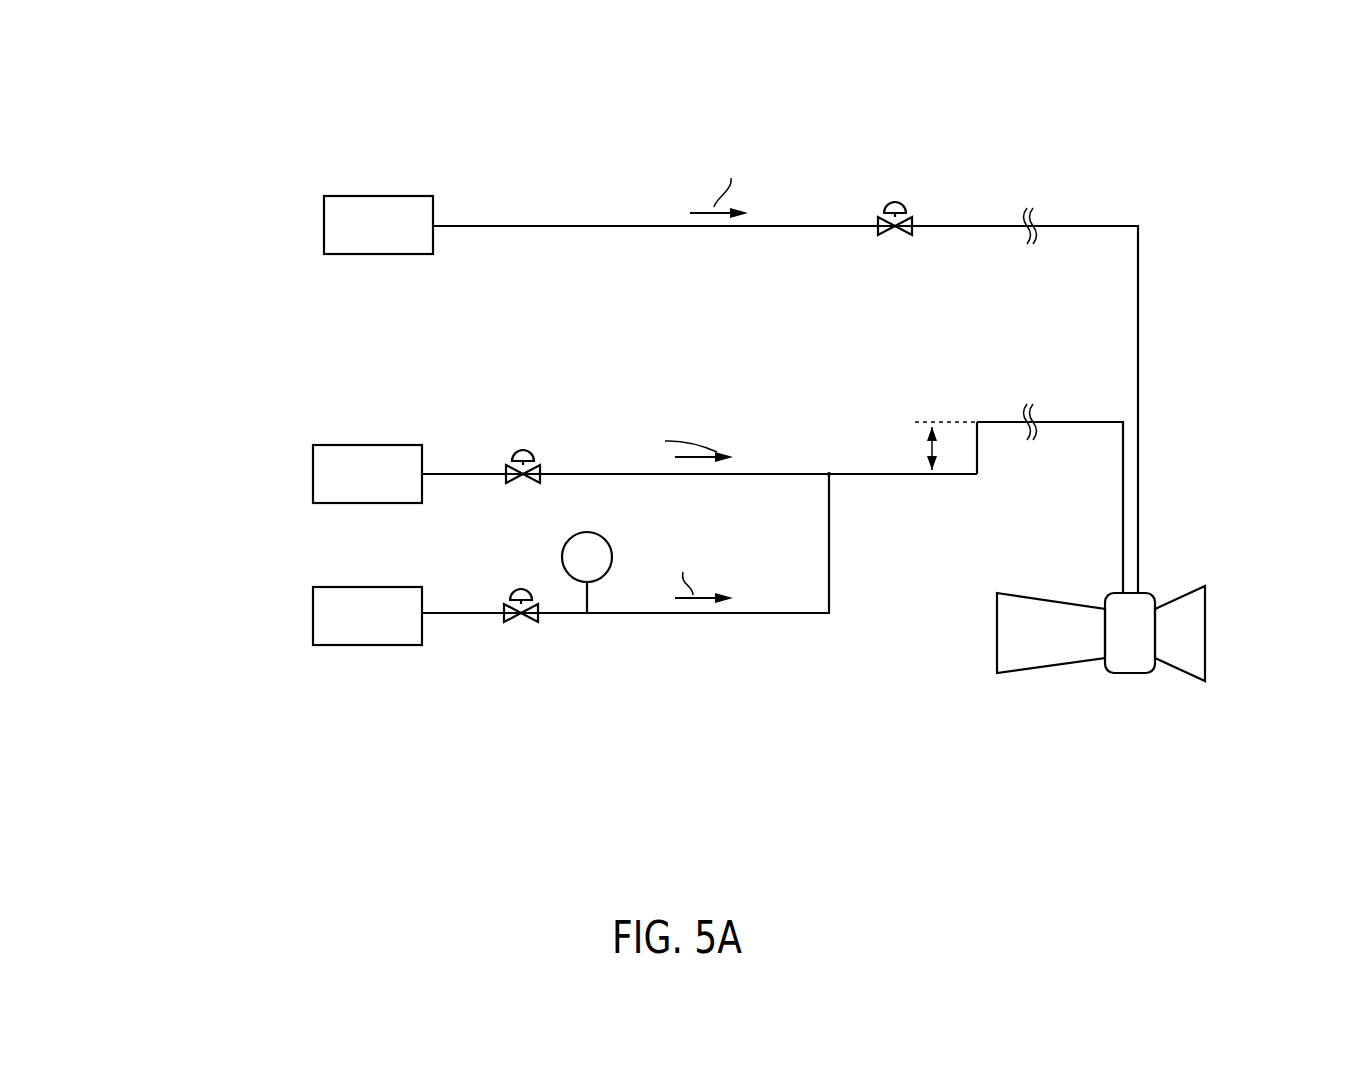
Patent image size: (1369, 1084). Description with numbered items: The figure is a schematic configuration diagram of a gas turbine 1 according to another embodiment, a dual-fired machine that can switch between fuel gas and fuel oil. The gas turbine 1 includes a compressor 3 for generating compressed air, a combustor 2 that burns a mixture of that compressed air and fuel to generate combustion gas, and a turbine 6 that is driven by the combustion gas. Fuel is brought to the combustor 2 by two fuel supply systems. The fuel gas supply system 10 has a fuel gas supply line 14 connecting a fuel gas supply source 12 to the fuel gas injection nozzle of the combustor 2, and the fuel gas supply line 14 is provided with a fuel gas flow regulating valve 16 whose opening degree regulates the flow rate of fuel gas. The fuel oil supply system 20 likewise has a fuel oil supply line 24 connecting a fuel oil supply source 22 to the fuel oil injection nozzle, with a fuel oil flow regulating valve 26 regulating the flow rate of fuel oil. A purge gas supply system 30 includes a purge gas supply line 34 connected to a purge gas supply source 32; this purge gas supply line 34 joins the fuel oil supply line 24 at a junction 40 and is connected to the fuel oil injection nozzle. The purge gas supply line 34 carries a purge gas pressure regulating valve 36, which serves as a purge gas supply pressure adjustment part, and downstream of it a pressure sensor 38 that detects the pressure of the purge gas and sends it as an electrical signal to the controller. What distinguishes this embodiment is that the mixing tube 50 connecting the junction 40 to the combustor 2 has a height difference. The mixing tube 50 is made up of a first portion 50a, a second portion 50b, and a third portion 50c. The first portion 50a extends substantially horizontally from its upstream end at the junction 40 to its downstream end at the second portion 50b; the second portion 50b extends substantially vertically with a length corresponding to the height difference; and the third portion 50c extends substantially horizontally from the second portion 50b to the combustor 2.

The gas turbine 1 is at (1242, 178).
The combustor 2 is at (1112, 765).
The compressor 3 is at (1013, 704).
The turbine 6 is at (1196, 705).
The fuel gas supply system 10 is at (473, 208).
The fuel gas supply source 12 is at (300, 213).
The fuel gas supply line 14 is at (710, 228).
The fuel gas flow regulating valve 16 is at (895, 202).
The fuel oil supply system 20 is at (454, 448).
The fuel oil supply source 22 is at (300, 462).
The fuel oil supply line 24 is at (757, 478).
The fuel oil flow regulating valve 26 is at (523, 450).
The purge gas supply system 30 is at (454, 628).
The purge gas supply source 32 is at (300, 601).
The purge gas supply line 34 is at (750, 615).
The purge gas pressure regulating valve 36 is at (508, 627).
The pressure sensor 38 is at (592, 590).
The junction 40 is at (834, 468).
The mixing tube 50 is at (1100, 420).
The first portion 50a is at (880, 478).
The second portion 50b is at (978, 436).
The third portion 50c is at (1005, 420).